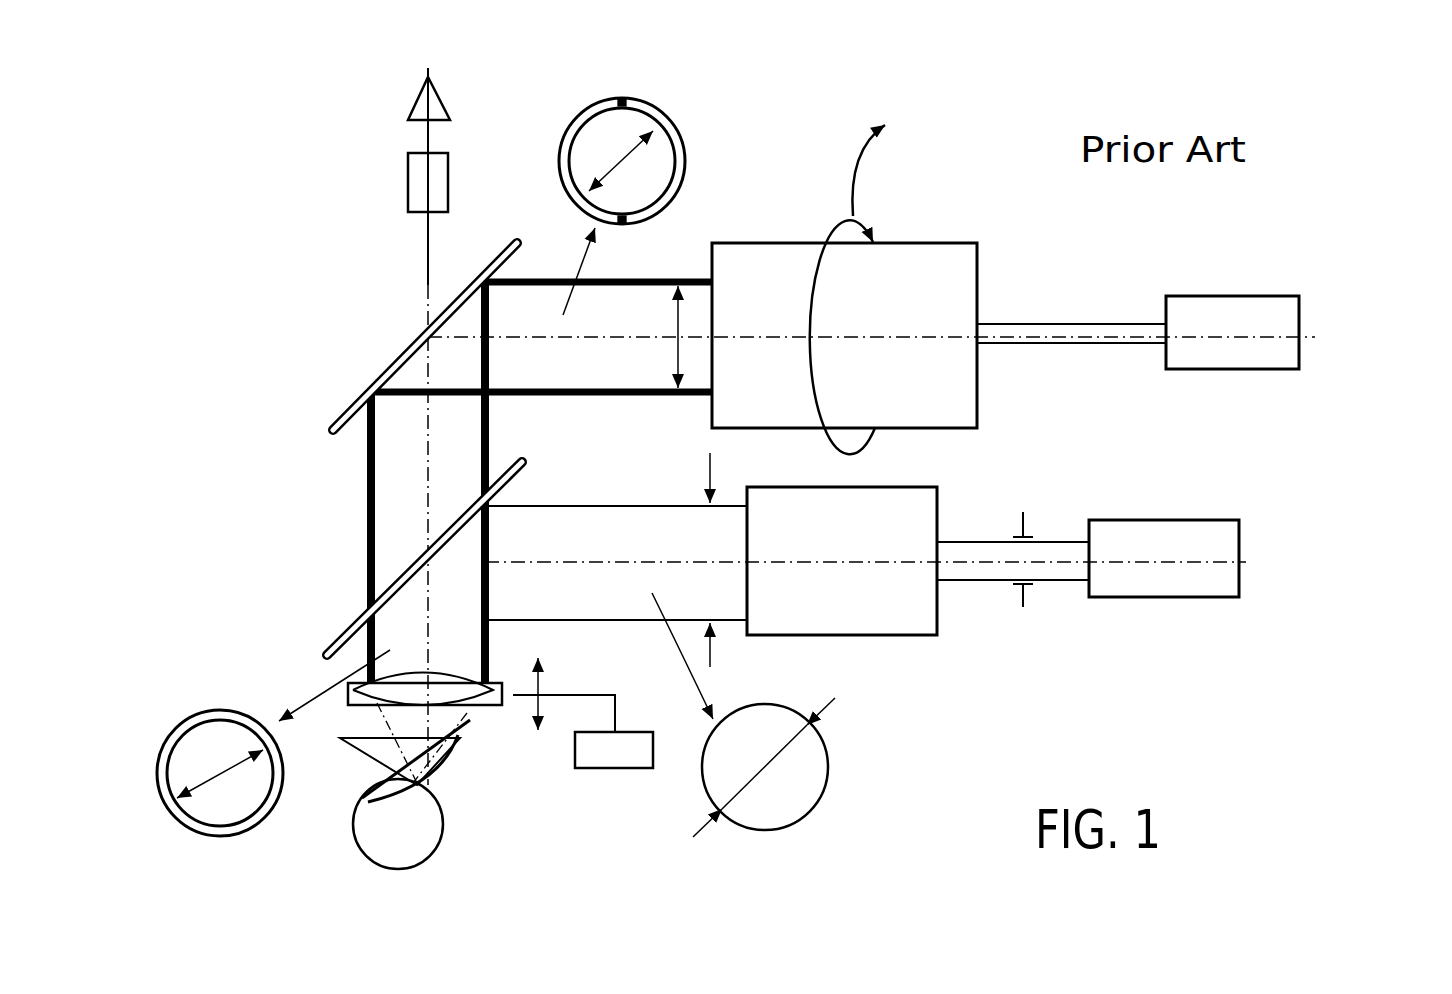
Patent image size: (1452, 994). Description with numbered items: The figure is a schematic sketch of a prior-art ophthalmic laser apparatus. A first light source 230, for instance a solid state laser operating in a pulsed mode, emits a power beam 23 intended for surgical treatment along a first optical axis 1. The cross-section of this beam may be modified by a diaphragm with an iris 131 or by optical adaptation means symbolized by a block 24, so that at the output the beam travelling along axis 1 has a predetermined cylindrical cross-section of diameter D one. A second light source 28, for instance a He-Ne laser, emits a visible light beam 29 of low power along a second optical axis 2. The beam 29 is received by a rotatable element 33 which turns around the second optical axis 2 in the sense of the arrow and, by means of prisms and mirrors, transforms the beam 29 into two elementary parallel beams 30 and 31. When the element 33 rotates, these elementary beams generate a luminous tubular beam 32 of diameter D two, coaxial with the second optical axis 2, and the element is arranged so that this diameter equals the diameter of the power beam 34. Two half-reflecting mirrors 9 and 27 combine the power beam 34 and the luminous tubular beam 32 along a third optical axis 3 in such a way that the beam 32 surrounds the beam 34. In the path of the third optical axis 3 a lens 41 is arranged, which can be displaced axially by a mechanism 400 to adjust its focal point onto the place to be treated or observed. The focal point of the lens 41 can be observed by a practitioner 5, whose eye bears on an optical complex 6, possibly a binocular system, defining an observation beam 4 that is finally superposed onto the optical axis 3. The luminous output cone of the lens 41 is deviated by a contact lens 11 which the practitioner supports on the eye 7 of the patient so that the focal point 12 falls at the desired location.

The first optical axis 1 is at (592, 562).
The second optical axis 2 is at (626, 158).
The third optical axis 3 is at (340, 642).
The observation beam 4 is at (428, 267).
The practitioner 5 is at (420, 103).
The optical complex 6 is at (418, 178).
The eye of the patient 7 is at (427, 832).
The half-reflecting mirror 9 is at (377, 373).
The contact lens 11 is at (370, 755).
The focal point 12 is at (358, 800).
The power beam 23 is at (1065, 582).
The optical adaptation means 24 is at (882, 605).
The half-reflecting mirror 27 is at (353, 623).
The second light source 28 is at (1285, 320).
The visible light beam 29 is at (1103, 345).
The elementary parallel beam 30 is at (618, 100).
The elementary parallel beam 31 is at (625, 220).
The luminous tubular beam 32 is at (678, 162).
The rotatable element 33 is at (930, 242).
The power beam 34 is at (610, 593).
The lens 41 is at (453, 682).
The diaphragm with an iris 131 is at (1024, 521).
The first light source 230 is at (1187, 535).
The mechanism 400 is at (613, 750).